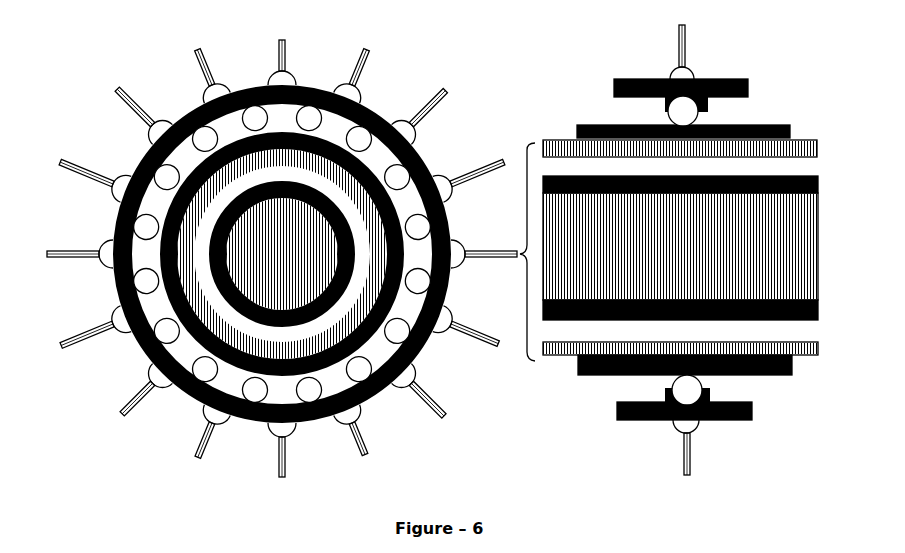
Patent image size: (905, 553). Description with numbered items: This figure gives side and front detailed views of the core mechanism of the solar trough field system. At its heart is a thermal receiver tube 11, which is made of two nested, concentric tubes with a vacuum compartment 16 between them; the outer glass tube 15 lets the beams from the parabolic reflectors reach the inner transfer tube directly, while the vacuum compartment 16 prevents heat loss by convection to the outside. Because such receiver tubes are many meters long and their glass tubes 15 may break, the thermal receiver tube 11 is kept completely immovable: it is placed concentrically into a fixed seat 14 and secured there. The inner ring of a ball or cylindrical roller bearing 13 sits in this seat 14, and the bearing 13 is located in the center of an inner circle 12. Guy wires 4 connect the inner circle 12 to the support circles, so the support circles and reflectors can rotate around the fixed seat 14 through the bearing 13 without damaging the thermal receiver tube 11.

The guy wires 4 is at (675, 47).
The thermal receiver tube 11 is at (520, 258).
The inner circle 12 is at (611, 85).
The ball or cylindrical roller bearing 13 is at (657, 113).
The seat 14 is at (571, 131).
The outer glass tube 15 is at (288, 352).
The vacuum compartment 16 is at (313, 332).